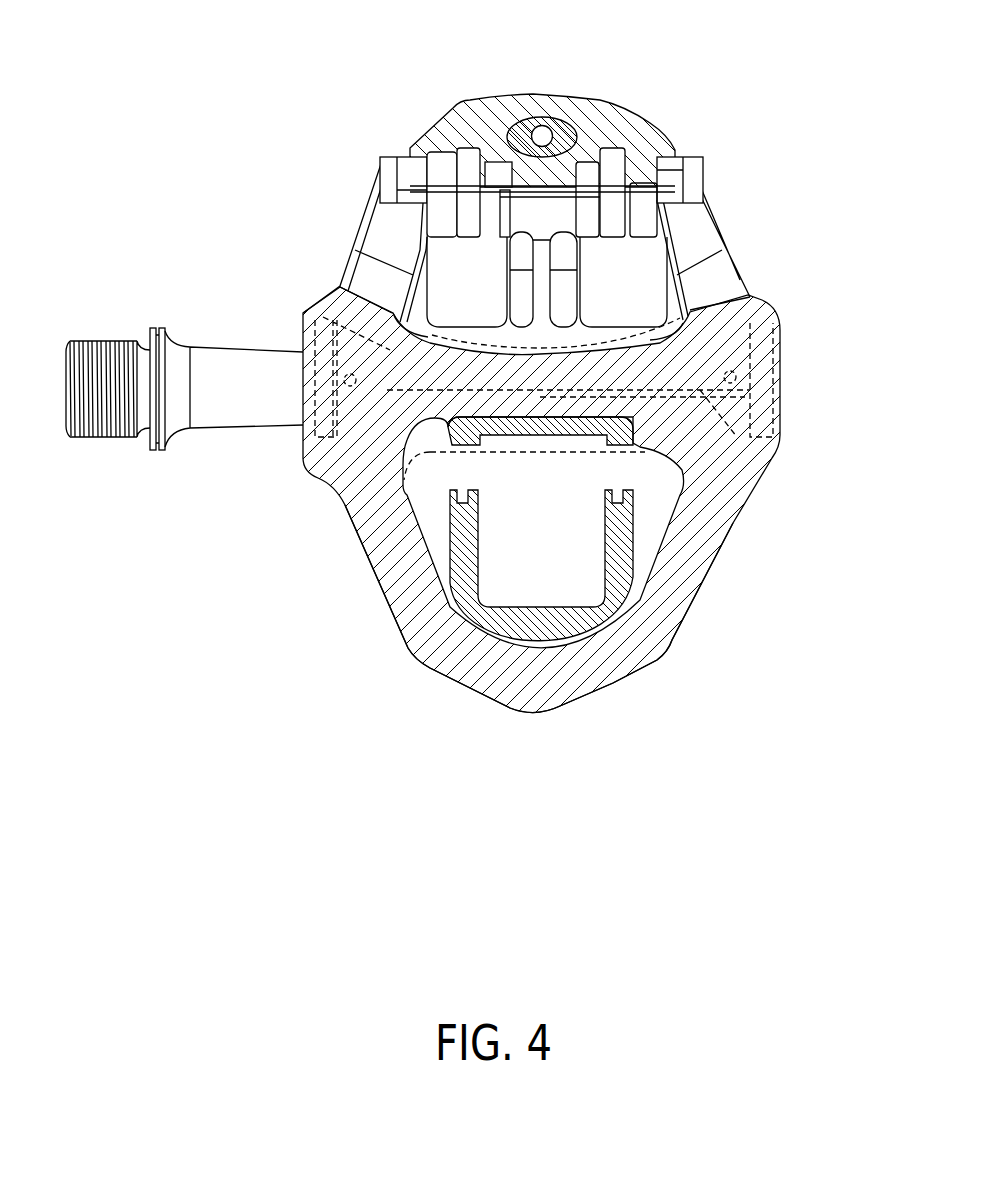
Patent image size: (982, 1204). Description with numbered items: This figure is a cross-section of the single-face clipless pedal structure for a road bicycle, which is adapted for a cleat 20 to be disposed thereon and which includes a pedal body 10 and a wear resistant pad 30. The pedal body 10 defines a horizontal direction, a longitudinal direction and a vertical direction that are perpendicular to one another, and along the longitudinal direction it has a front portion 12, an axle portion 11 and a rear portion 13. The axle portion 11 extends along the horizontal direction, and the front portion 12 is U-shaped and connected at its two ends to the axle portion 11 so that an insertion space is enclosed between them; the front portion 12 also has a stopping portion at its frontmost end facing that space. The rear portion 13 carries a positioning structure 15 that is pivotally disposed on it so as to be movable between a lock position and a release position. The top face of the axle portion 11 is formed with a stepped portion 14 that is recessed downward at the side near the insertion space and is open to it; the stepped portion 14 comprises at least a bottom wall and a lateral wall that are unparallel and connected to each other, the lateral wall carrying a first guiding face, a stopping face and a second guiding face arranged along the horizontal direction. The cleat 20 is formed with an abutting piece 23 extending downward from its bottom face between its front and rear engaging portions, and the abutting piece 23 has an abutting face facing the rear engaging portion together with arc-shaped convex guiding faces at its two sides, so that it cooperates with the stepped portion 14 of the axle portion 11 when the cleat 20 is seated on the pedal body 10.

The pedal body 10 is at (745, 524).
The axle portion 11 is at (383, 407).
The front portion 12 is at (612, 667).
The rear portion 13 is at (686, 240).
The stepped portion 14 is at (497, 425).
The positioning structure 15 is at (597, 125).
The cleat 20 is at (620, 557).
The abutting piece 23 is at (643, 422).
The wear resistant pad 30 is at (770, 312).